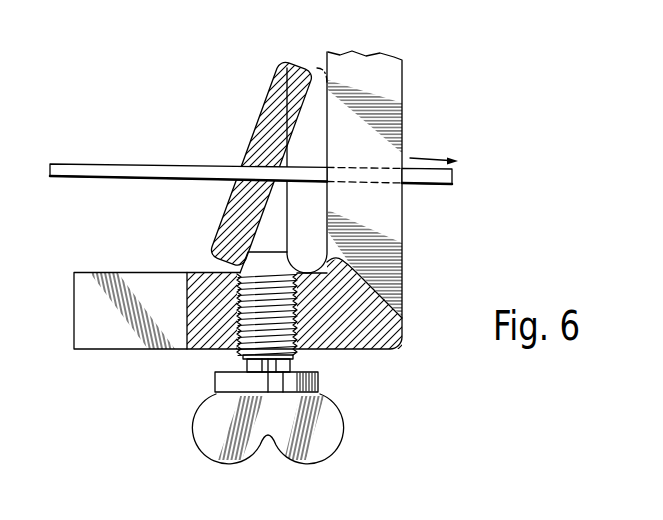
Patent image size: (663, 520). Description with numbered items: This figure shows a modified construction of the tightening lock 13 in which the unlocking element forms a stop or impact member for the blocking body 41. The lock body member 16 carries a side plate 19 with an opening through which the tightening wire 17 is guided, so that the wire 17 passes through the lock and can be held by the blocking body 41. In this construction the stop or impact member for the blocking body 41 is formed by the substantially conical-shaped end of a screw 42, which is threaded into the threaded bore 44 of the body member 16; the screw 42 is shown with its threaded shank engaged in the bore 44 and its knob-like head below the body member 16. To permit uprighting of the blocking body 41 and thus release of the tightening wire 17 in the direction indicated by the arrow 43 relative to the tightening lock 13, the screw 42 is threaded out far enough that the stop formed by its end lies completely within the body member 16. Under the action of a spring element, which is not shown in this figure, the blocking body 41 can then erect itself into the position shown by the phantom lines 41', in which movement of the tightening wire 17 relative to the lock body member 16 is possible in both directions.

The tightening lock 13 is at (405, 360).
The tightening lock body member 16 is at (112, 337).
The tightening wire 17 is at (115, 167).
The side plate 19 is at (380, 70).
The blocking body 41 is at (260, 160).
The uprighted position of blocking body 41' is at (323, 46).
The screw 42 is at (186, 432).
The arrow 43 is at (430, 155).
The threaded bore 44 is at (297, 313).